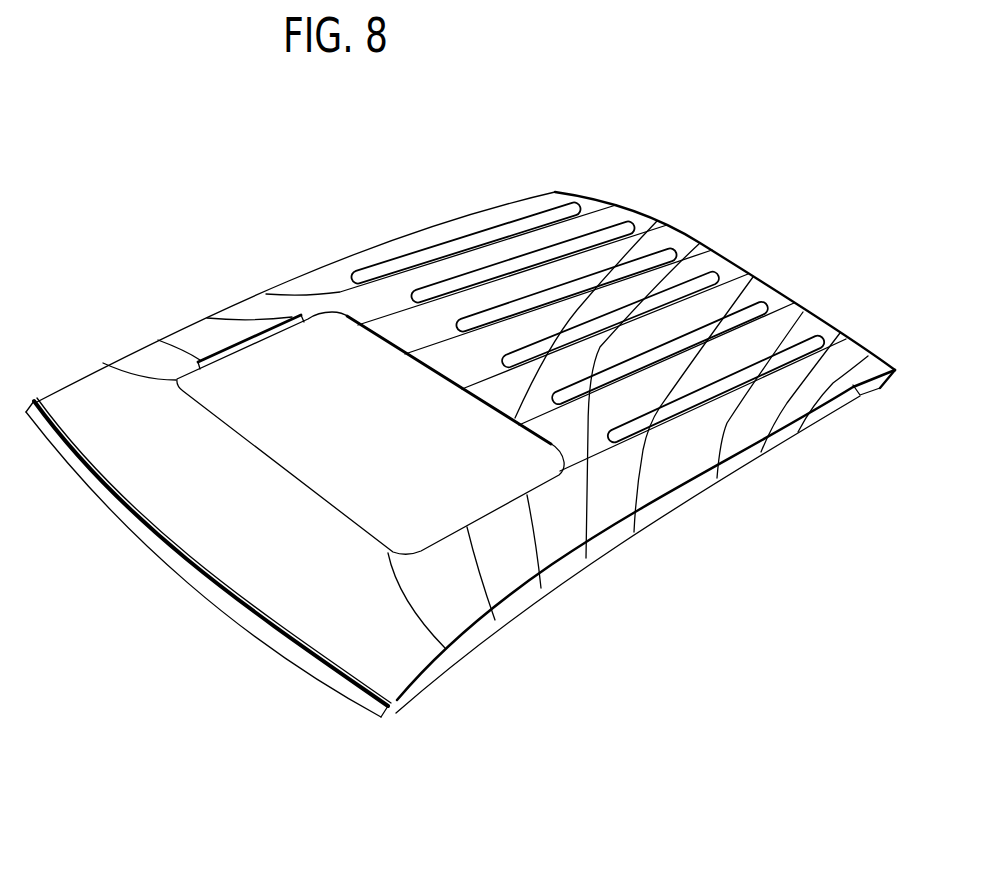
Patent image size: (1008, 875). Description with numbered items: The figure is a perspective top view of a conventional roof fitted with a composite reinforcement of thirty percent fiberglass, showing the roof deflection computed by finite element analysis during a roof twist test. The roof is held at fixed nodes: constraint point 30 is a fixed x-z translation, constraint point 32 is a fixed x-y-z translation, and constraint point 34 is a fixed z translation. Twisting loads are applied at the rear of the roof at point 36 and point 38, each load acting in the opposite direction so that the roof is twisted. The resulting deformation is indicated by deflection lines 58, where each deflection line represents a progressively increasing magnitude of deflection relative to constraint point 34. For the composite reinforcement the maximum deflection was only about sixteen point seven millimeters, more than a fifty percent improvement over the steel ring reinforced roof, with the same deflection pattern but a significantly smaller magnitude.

The constraint point 30 is at (30, 400).
The constraint point 32 is at (395, 714).
The constraint point 34 is at (722, 258).
The load point 36 is at (895, 370).
The load point 38 is at (556, 190).
The deflection lines 58 is at (330, 288).